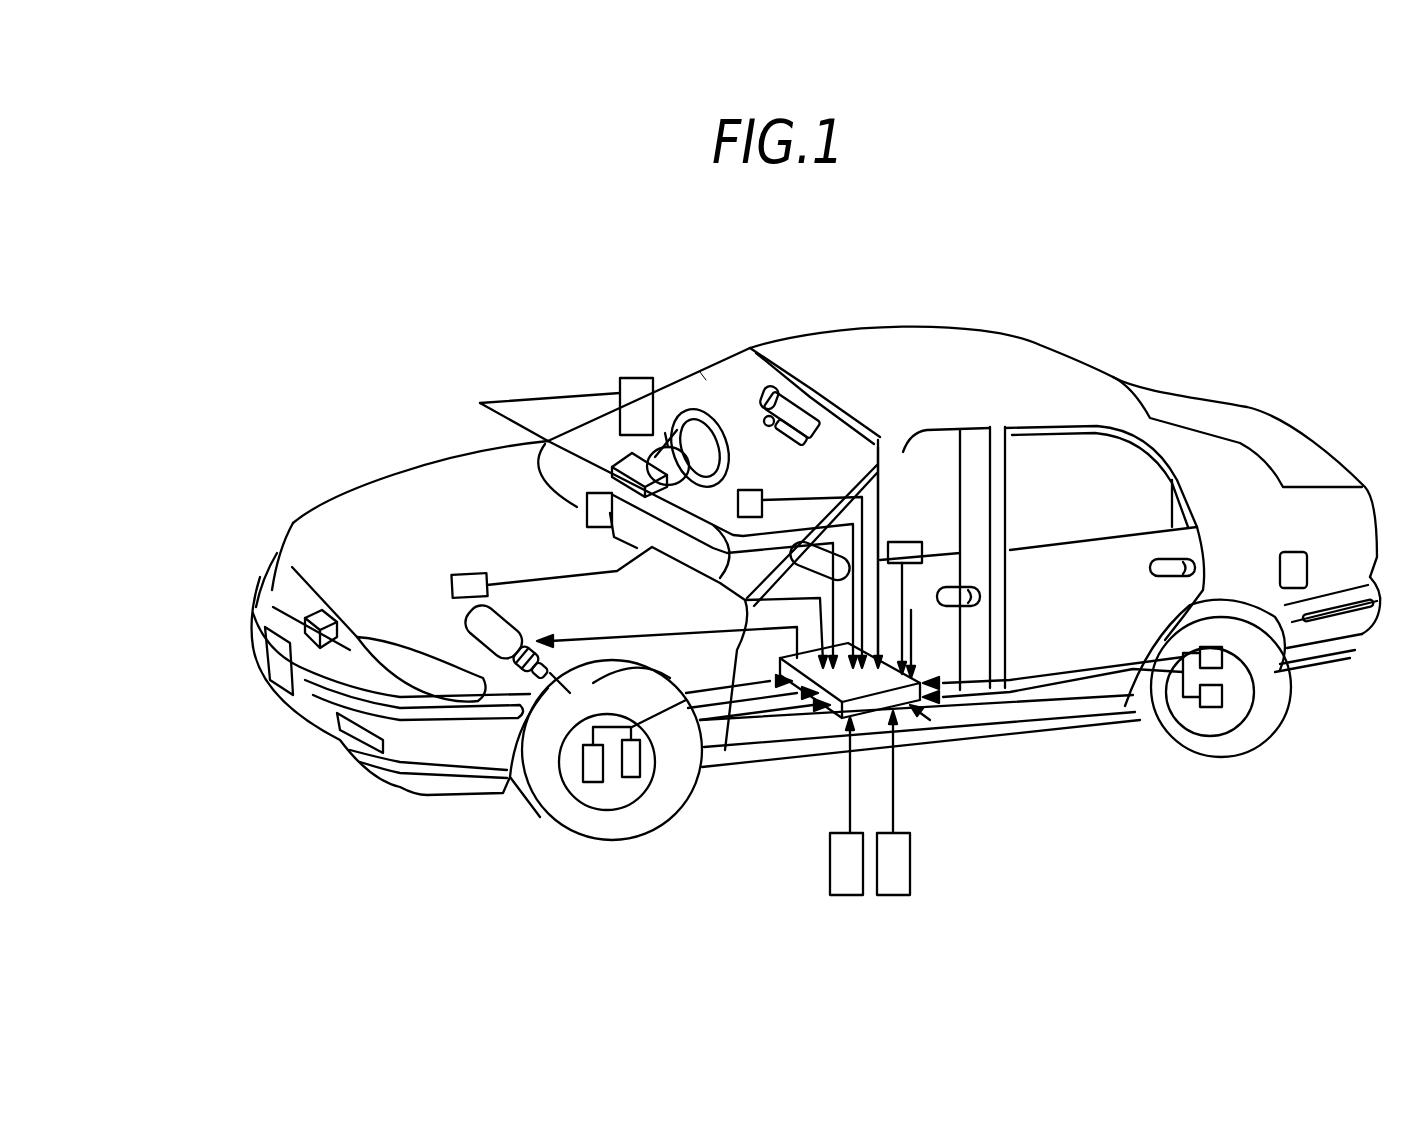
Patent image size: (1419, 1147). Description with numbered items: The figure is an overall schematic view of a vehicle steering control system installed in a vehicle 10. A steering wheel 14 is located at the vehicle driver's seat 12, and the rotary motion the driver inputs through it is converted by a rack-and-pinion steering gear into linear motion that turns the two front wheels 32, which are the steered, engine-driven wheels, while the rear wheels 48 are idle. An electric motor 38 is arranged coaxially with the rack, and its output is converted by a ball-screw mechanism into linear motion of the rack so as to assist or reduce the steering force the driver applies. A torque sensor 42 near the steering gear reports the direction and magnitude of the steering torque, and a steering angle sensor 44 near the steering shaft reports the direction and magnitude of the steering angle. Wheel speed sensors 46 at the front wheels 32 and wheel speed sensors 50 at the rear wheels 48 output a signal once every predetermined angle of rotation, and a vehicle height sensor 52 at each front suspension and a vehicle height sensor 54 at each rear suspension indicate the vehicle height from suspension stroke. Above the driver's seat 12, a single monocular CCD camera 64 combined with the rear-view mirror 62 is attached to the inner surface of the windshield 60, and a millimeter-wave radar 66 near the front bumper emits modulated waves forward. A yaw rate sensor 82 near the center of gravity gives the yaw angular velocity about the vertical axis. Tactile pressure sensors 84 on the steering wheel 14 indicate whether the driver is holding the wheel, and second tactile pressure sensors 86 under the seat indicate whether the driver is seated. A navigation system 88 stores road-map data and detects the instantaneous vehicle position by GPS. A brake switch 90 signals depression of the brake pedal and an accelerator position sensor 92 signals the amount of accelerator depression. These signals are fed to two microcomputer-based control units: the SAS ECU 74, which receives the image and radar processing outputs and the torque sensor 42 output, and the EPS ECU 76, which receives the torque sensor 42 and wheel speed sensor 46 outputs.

The vehicle 10 is at (1118, 345).
The vehicle driver's seat 12 is at (713, 375).
The steering wheel 14 is at (684, 410).
The front wheel 32 is at (594, 832).
The electric motor 38 is at (473, 618).
The torque sensor 42 is at (463, 581).
The steering angle sensor 44 is at (587, 515).
The wheel speed sensor 46 is at (598, 772).
The rear wheel 48 is at (1257, 707).
The wheel speed sensor 50 is at (1212, 700).
The vehicle height sensor 52 is at (637, 768).
The vehicle height sensor 54 is at (1222, 660).
The windshield 60 is at (789, 425).
The rear-view mirror 62 is at (768, 388).
The CCD camera 64 is at (765, 424).
The radar 66 is at (306, 621).
The SAS ECU 74 is at (1011, 744).
The EPS ECU 76 is at (920, 718).
The yaw rate sensor 82 is at (905, 540).
The tactile pressure sensor 84 is at (631, 385).
The second tactile pressure sensor 86 is at (740, 503).
The navigation system 88 is at (612, 462).
The brake switch 90 is at (846, 892).
The accelerator position sensor 92 is at (895, 892).